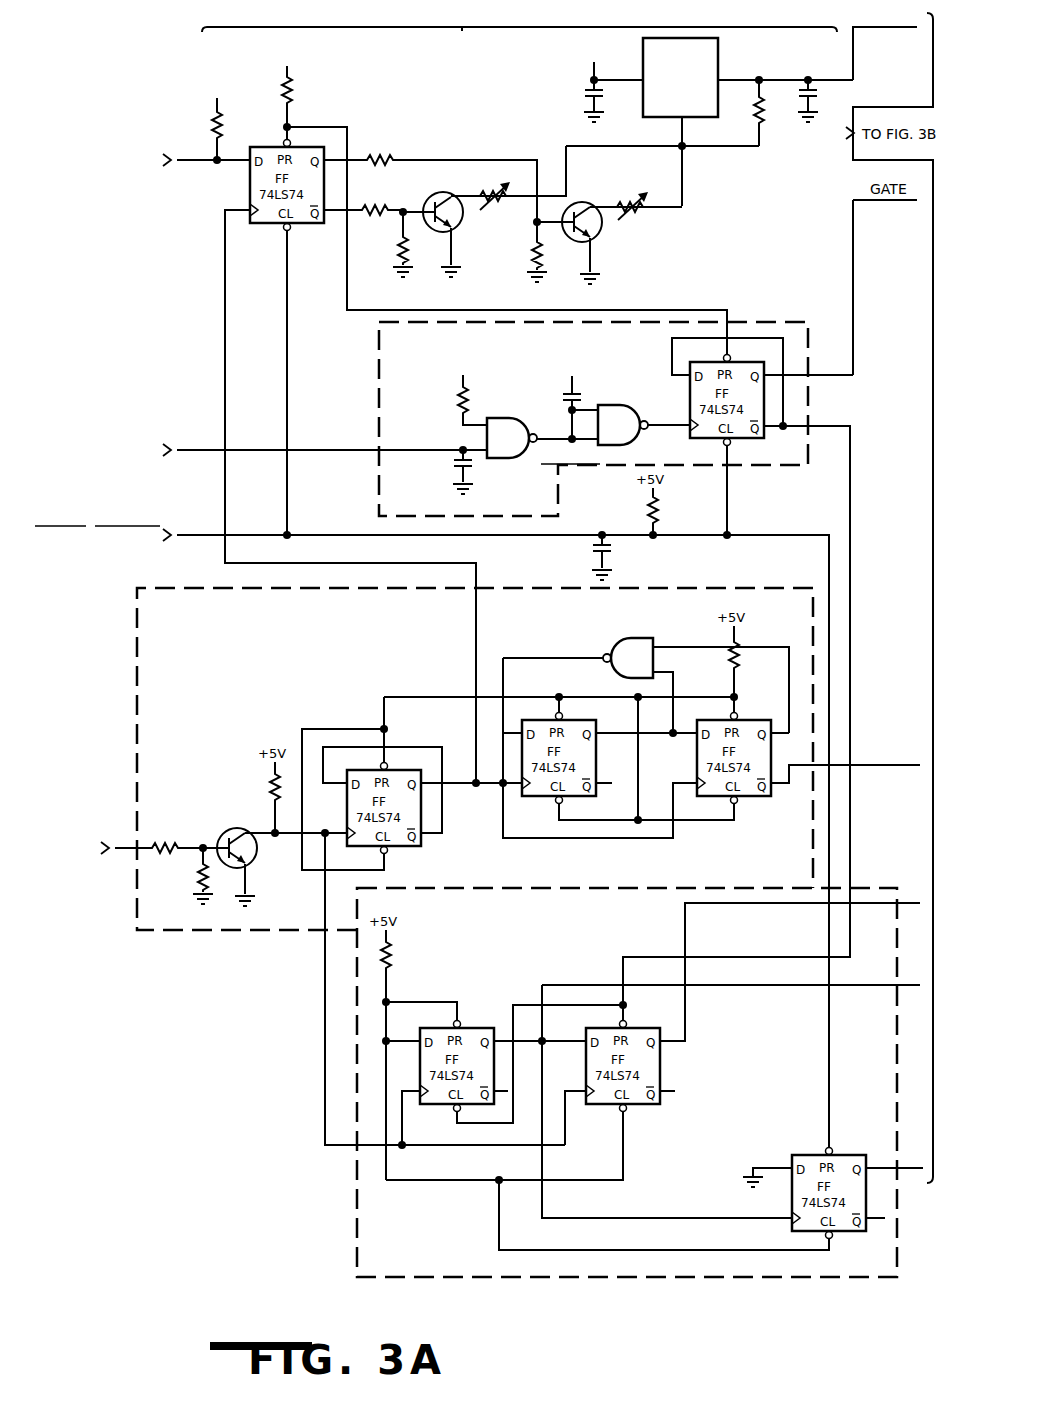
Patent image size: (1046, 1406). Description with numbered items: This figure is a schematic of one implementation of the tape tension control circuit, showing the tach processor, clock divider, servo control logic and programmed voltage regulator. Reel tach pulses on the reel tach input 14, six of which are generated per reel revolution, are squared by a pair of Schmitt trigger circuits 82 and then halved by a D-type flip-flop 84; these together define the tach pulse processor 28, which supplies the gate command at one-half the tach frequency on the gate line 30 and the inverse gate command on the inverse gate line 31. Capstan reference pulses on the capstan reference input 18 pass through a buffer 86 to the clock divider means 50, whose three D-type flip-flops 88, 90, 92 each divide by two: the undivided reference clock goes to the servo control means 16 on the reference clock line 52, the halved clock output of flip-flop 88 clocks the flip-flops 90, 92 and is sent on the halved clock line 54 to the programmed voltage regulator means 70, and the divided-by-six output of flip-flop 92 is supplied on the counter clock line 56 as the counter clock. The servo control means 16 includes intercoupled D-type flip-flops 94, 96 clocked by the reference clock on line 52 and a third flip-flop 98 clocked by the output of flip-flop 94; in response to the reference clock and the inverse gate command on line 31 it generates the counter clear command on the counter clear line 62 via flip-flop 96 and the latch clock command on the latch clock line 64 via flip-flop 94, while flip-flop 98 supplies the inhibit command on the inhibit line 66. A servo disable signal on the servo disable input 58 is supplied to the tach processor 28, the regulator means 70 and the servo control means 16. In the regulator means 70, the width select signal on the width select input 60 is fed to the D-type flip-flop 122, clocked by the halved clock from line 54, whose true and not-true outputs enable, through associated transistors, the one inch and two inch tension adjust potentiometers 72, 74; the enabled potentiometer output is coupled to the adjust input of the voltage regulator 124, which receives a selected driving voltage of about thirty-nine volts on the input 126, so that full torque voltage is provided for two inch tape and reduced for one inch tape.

The programmed voltage regulator means 70 is at (519, 17).
The voltage regulator 124 is at (718, 57).
The input 126 is at (590, 68).
The D-type flip-flop 122 is at (263, 140).
The width select input 60 is at (182, 157).
The two inch tension adjust potentiometer 74 is at (467, 220).
The one inch tension adjust potentiometer 72 is at (608, 228).
The gate line 30 is at (853, 241).
The tach pulse processor 28 is at (378, 386).
The reel tach input 14 is at (182, 447).
The Schmitt trigger circuits 82 is at (558, 424).
The D-type flip-flop 84 is at (688, 393).
The inverse gate line 31 is at (832, 426).
The servo disable input 58 is at (185, 532).
The fc/2 line 54 is at (463, 567).
The capstan reference input 18 is at (118, 845).
The buffer 86 is at (240, 826).
The first D-type flip-flop 88 is at (402, 848).
The second D-type flip-flop 90 is at (534, 797).
The third D-type flip-flop 92 is at (768, 797).
The fc/6 line 56 is at (898, 768).
The clock divider means 50 is at (258, 932).
The fc line 52 is at (323, 990).
The counter clear line 62 is at (878, 908).
The latch clock line 64 is at (875, 990).
The D-type flip-flop 94 is at (481, 1026).
The D-type flip-flop 96 is at (662, 1065).
The third flip-flop 98 is at (808, 1154).
The servo control means 16 is at (355, 1235).
The inhibit line 66 is at (905, 1172).